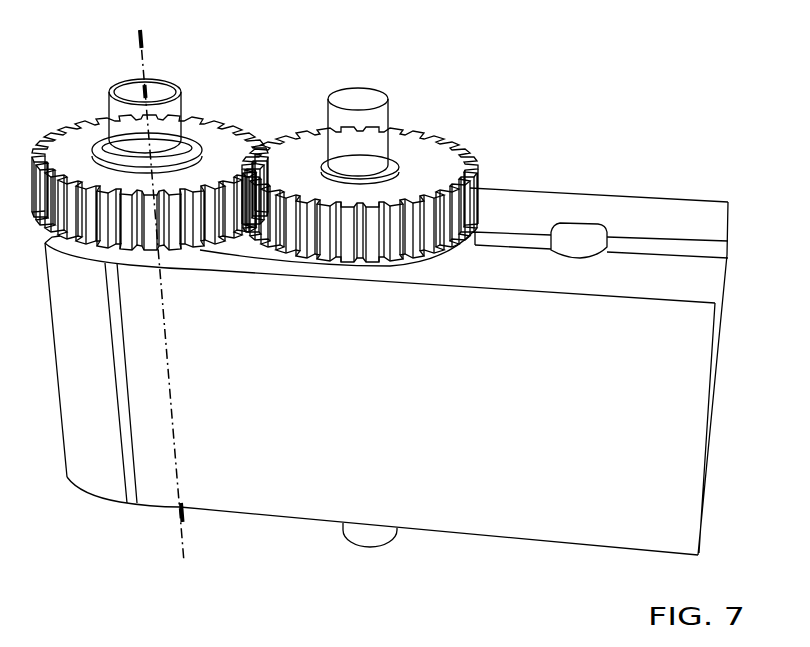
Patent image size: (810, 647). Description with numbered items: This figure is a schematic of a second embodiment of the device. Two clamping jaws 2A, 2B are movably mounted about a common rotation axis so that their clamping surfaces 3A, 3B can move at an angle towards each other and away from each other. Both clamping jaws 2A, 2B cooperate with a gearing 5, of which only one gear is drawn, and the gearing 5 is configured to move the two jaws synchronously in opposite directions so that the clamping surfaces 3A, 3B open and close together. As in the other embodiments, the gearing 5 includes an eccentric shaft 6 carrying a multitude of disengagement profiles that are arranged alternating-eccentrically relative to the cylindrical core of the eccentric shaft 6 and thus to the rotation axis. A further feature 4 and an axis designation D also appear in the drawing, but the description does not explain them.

The clamping jaw 2A is at (515, 495).
The clamping jaw 2B is at (658, 208).
The clamping surface 3A is at (569, 244).
The clamping surface 3B is at (594, 218).
The support protrusion 4 is at (579, 206).
The gearing 5 is at (266, 61).
The eccentric shaft 6 is at (378, 120).
The rotation axis D is at (140, 38).